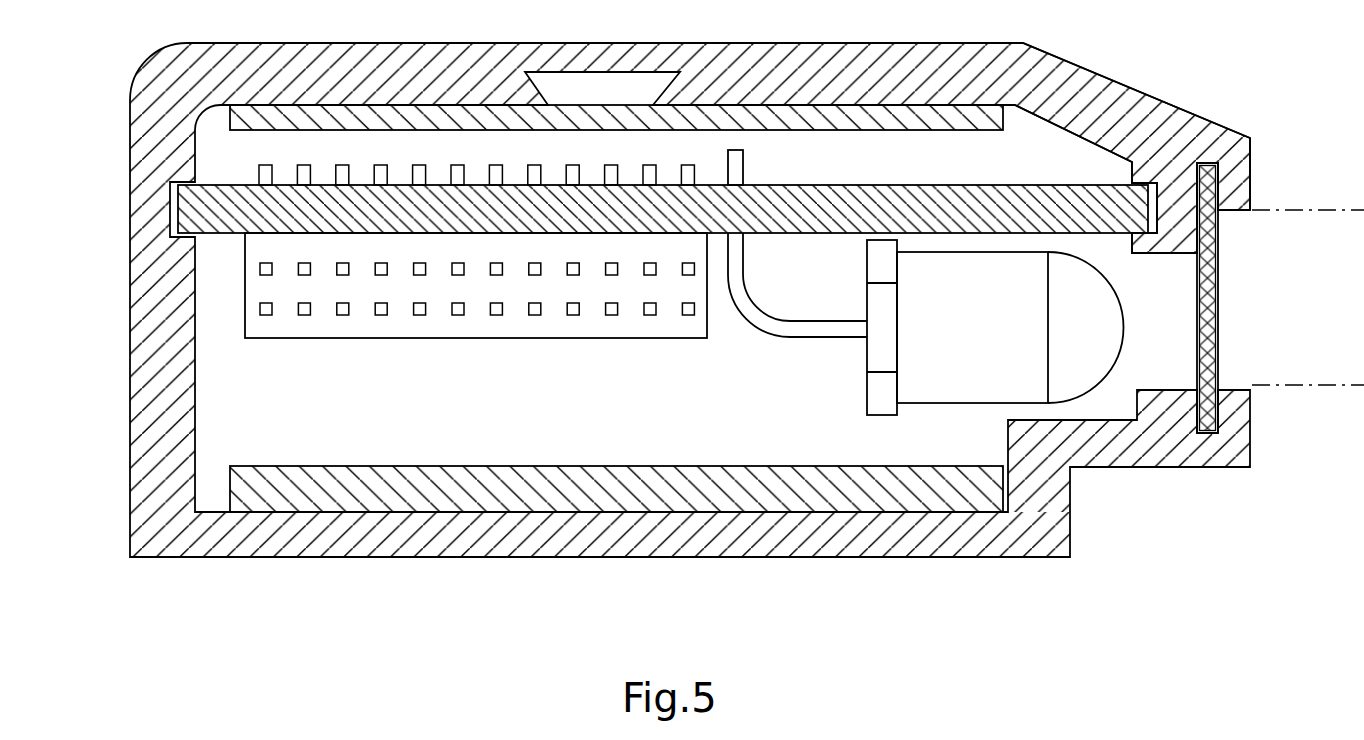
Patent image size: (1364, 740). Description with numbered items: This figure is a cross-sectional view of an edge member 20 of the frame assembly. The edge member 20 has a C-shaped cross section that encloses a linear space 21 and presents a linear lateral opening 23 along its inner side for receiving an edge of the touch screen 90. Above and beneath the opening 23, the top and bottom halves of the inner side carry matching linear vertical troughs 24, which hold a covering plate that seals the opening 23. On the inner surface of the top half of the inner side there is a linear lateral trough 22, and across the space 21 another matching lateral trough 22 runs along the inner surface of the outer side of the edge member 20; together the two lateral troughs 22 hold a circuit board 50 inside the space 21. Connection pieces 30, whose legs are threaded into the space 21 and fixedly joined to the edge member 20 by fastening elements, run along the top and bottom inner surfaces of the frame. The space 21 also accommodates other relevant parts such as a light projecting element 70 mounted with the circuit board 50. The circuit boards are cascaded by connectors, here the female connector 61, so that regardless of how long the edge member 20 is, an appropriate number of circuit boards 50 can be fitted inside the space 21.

The edge member 20 is at (838, 52).
The linear space 21 is at (679, 438).
The lateral trough 22 is at (1155, 185).
The lateral opening 23 is at (1253, 211).
The vertical trough 24 is at (1214, 161).
The connection piece 30 is at (372, 117).
The circuit board 50 is at (1052, 190).
The female connector 61 is at (250, 297).
The light projecting element 70 is at (1073, 386).
The touch screen 90 is at (1314, 385).